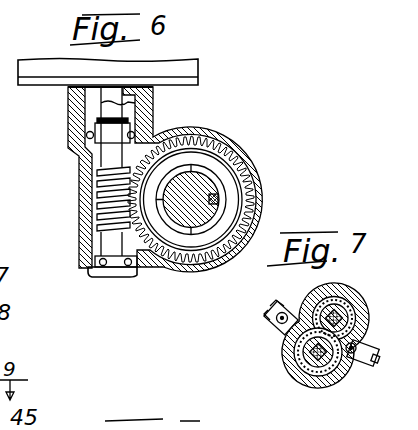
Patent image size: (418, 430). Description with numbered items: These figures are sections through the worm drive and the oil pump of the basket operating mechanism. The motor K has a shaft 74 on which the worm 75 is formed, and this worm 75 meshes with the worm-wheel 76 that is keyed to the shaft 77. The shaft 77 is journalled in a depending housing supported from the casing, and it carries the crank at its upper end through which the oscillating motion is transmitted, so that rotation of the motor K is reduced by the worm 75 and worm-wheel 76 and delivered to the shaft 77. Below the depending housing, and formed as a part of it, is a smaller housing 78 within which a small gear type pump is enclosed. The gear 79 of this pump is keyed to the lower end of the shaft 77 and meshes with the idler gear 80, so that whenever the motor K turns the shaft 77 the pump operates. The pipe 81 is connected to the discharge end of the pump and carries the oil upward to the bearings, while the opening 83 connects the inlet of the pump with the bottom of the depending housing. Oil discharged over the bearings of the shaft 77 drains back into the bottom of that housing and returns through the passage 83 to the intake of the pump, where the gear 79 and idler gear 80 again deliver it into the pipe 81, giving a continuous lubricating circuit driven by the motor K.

In FIG. 6, the motor K is at (197, 63).
In FIG. 6, the shaft 74 is at (150, 101).
In FIG. 6, the worm 75 is at (101, 207).
In FIG. 6, the worm-wheel 76 is at (172, 130).
In FIG. 6, the shaft 77 is at (208, 180).
In FIG. 7, the shaft 77 is at (336, 316).
In FIG. 7, the smaller housing 78 is at (331, 386).
In FIG. 7, the gear 79 is at (352, 322).
In FIG. 7, the idler gear 80 is at (294, 378).
In FIG. 7, the pipe 81 is at (378, 352).
In FIG. 7, the opening 83 is at (278, 323).